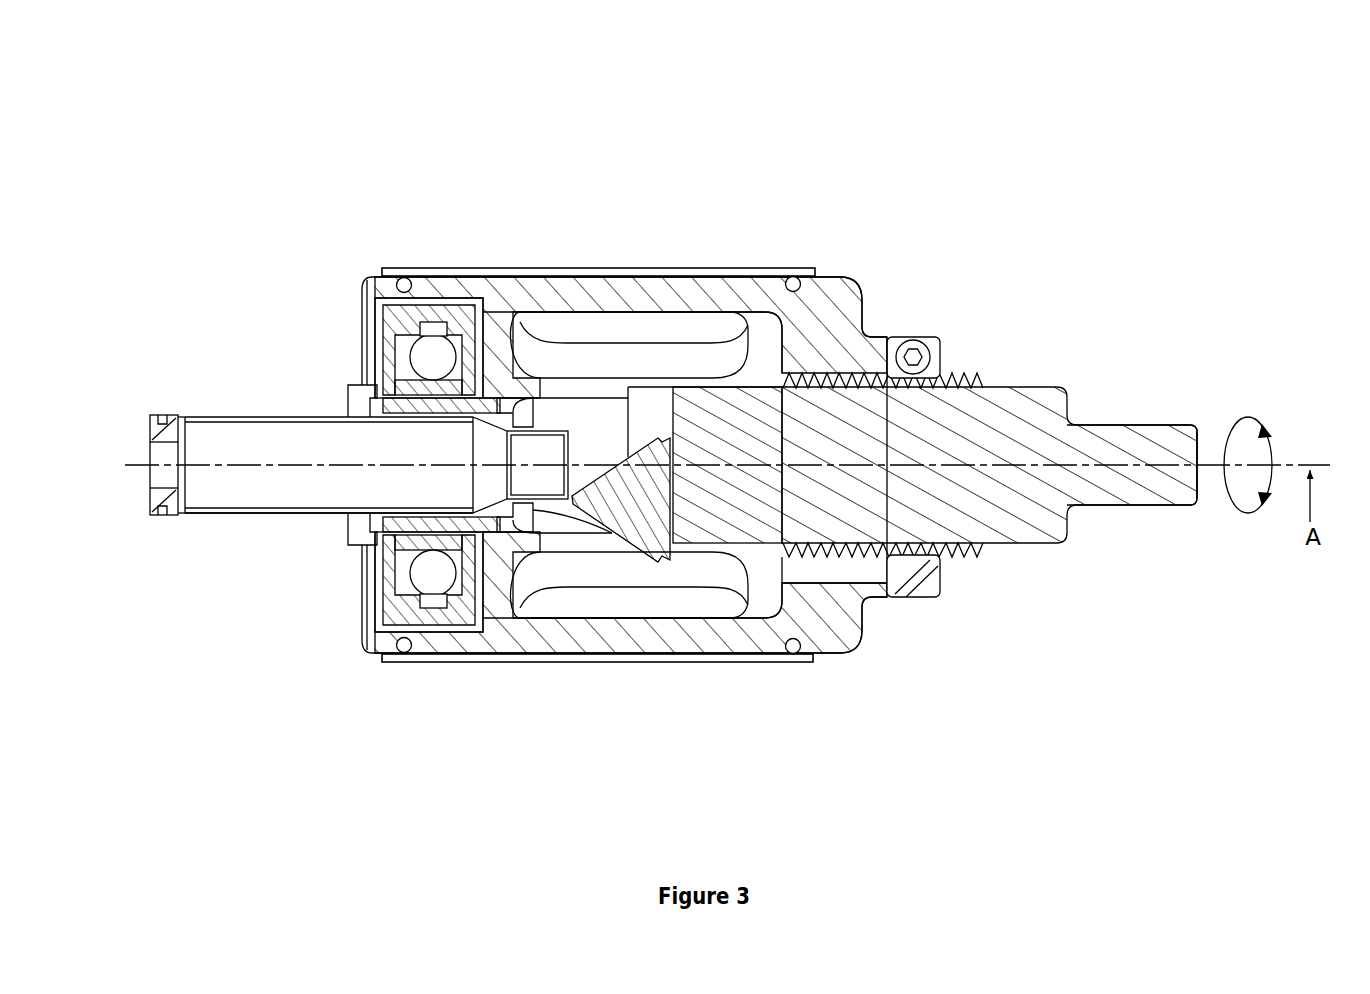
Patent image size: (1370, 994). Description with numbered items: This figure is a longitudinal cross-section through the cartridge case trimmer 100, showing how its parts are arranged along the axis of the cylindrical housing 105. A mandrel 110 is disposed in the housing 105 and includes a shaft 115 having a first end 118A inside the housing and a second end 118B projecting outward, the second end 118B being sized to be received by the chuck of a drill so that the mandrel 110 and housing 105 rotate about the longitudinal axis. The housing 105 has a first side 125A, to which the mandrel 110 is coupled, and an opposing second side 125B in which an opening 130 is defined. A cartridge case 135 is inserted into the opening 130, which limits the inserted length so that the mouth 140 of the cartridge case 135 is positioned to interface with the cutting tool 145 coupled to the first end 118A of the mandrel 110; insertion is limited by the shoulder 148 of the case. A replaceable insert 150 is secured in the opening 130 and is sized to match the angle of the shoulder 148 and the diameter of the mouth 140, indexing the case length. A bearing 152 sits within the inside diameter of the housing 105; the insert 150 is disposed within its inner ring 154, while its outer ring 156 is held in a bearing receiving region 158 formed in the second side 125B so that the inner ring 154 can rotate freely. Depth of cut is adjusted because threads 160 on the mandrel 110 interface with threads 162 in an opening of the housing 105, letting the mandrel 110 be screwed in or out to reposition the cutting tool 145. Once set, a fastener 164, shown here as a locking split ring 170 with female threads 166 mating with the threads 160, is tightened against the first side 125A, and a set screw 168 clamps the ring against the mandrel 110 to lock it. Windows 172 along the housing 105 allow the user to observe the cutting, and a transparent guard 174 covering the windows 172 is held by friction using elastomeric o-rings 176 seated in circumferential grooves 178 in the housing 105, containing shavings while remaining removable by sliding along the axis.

The cartridge case trimmer 100 is at (814, 140).
The housing 105 is at (862, 282).
The mandrel 110 is at (1048, 382).
The shaft 115 is at (1167, 418).
The first end 118A is at (716, 378).
The second end 118B is at (1203, 490).
The first side 125A is at (853, 655).
The second side 125B is at (355, 650).
The opening 130 is at (340, 523).
The cartridge case 135 is at (256, 412).
The mouth 140 is at (557, 420).
The cutting tool 145 is at (619, 540).
The shoulder 148 is at (493, 417).
The insert 150 is at (348, 395).
The bearing 152 is at (430, 305).
The inner ring 154 is at (460, 375).
The outer ring 156 is at (432, 618).
The bearing receiving region 158 is at (450, 637).
The threads 160 is at (966, 563).
The threads 162 is at (860, 365).
The fastener 164 is at (942, 327).
The female threads 166 is at (927, 563).
The set screw 168 is at (942, 353).
The locking split ring 170 is at (918, 603).
The windows 172 is at (640, 322).
The guard 174 is at (568, 266).
The o-rings 176 is at (392, 657).
The circumferential grooves 178 is at (822, 330).